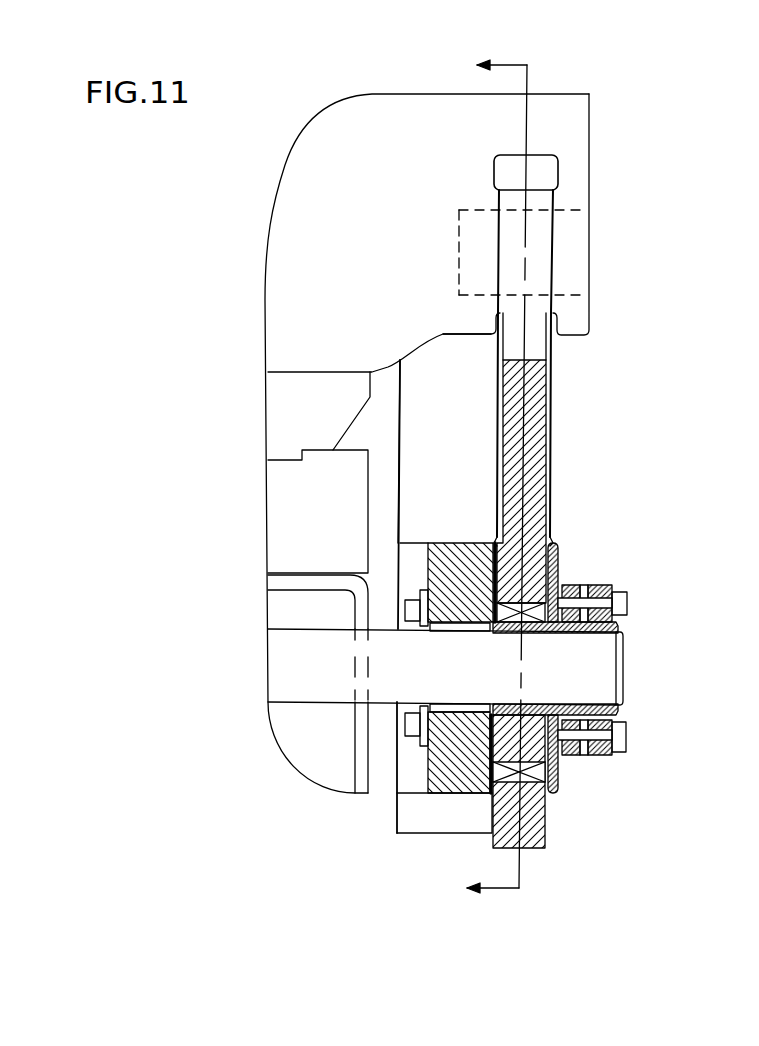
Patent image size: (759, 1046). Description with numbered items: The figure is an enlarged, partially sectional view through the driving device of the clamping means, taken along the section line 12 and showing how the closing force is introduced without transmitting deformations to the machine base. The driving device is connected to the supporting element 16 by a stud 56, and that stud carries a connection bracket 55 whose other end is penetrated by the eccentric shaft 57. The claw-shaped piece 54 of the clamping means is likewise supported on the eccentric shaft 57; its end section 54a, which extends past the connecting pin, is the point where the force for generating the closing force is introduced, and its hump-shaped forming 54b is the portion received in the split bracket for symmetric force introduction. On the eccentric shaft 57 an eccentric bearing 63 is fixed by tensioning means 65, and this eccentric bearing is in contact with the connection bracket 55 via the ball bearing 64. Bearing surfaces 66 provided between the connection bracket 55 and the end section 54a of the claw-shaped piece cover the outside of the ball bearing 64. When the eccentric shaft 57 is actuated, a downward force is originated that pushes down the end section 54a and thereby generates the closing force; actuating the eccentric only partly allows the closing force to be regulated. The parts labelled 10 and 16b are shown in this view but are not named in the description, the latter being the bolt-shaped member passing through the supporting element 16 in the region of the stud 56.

The bearing support 10 is at (323, 578).
The section line 12 is at (514, 494).
The supporting element 16 is at (362, 252).
The bolt 16b is at (540, 277).
The claw-shaped piece 54 is at (405, 837).
The end section 54a is at (457, 567).
The hump-shaped forming 54b is at (472, 426).
The connection bracket 55 is at (532, 456).
The stud 56 is at (573, 244).
The eccentric shaft 57 is at (297, 679).
The eccentric bearing 63 is at (559, 776).
The ball bearing 64 is at (560, 590).
The tensioning means 65 is at (610, 753).
The bearing surfaces 66 is at (553, 542).